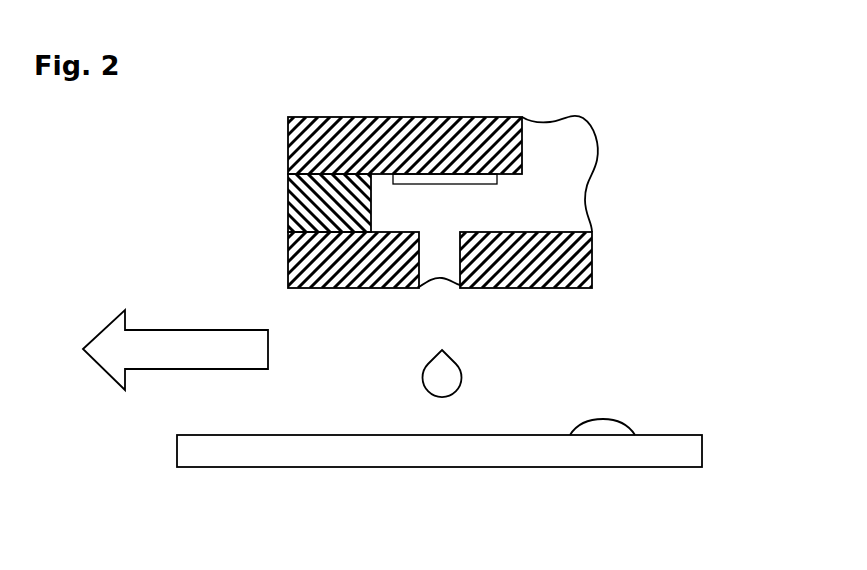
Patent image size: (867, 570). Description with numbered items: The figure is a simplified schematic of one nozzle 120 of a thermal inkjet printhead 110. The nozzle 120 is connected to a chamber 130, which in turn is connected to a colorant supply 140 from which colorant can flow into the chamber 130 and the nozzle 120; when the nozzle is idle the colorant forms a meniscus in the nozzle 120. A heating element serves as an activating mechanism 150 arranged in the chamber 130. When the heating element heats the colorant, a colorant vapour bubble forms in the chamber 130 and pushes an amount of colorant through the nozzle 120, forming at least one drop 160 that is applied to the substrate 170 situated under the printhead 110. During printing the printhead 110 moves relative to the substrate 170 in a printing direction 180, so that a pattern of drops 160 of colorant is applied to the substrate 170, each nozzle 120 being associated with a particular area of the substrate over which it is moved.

The thermal inkjet printhead 110 is at (258, 199).
The nozzle 120 is at (452, 304).
The chamber 130 is at (538, 198).
The colorant supply 140 is at (567, 142).
The activating mechanism 150 is at (415, 183).
The drop 160 is at (478, 381).
The substrate 170 is at (550, 450).
The printing direction 180 is at (201, 338).